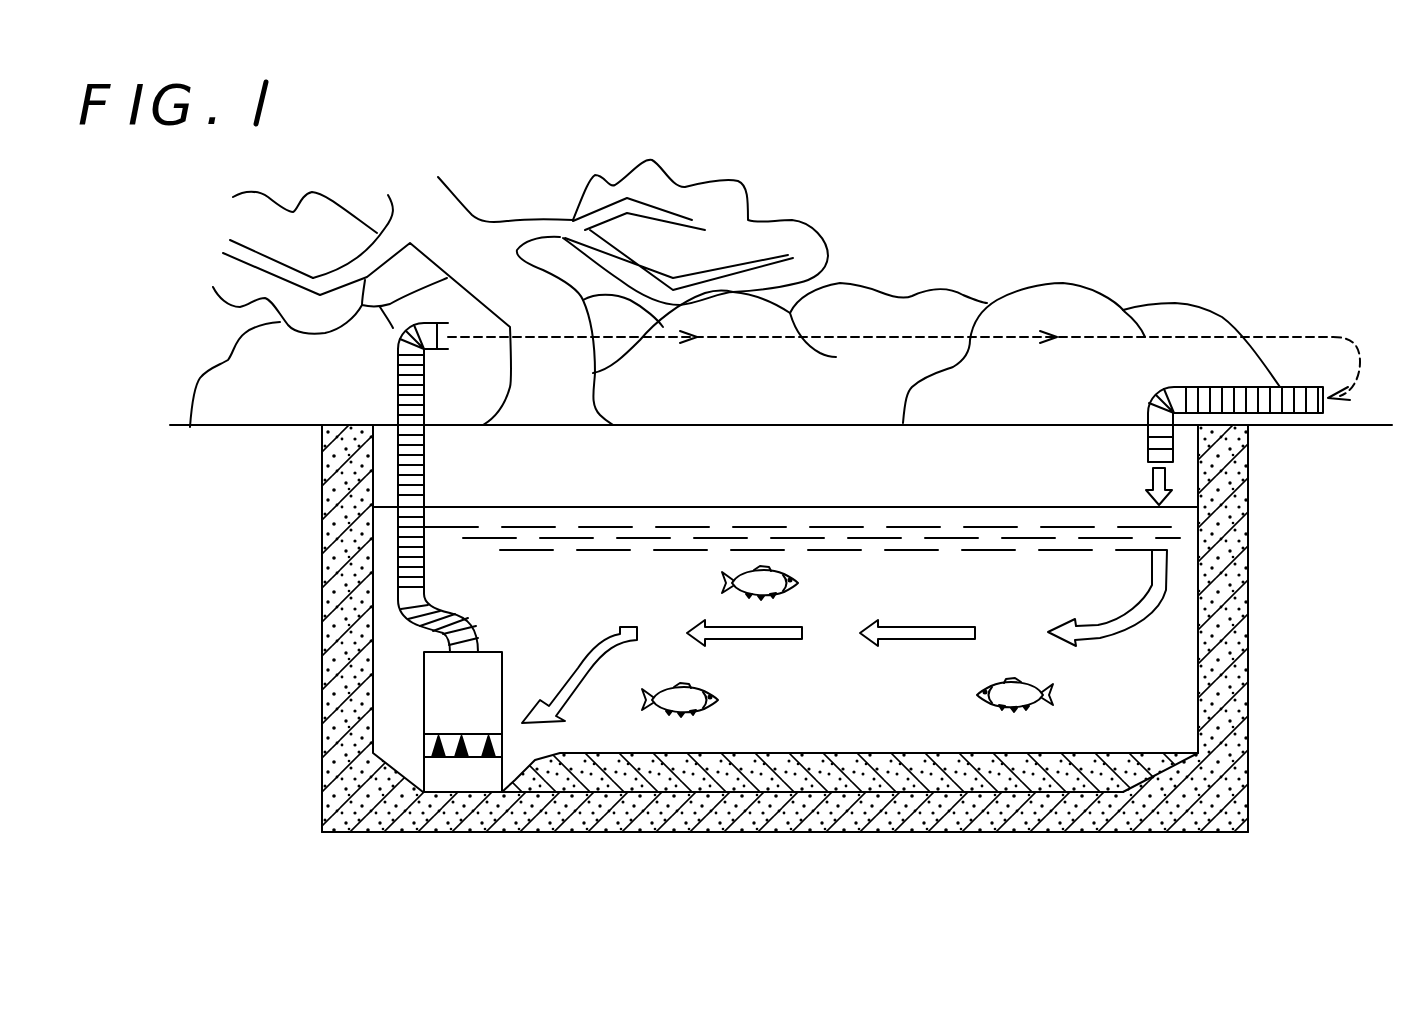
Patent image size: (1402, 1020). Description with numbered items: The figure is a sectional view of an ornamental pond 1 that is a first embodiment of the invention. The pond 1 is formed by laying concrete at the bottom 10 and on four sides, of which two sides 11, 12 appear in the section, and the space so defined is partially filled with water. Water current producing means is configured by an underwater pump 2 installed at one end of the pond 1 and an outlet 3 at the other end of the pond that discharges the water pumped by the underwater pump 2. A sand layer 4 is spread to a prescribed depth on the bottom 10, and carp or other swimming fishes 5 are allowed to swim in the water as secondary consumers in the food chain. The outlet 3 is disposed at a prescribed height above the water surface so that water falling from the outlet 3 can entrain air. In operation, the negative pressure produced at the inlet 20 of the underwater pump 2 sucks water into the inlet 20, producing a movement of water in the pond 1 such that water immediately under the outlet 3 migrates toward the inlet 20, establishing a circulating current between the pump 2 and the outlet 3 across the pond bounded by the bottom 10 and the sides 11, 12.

The ornamental pond 1 is at (785, 472).
The underwater pump 2 is at (447, 695).
The outlet 3 is at (1157, 443).
The sand layer 4 is at (822, 777).
The swimming fishes 5 is at (690, 716).
The bottom 10 is at (1013, 822).
The side 11 is at (1236, 660).
The side 12 is at (343, 582).
The inlet 20 is at (430, 747).